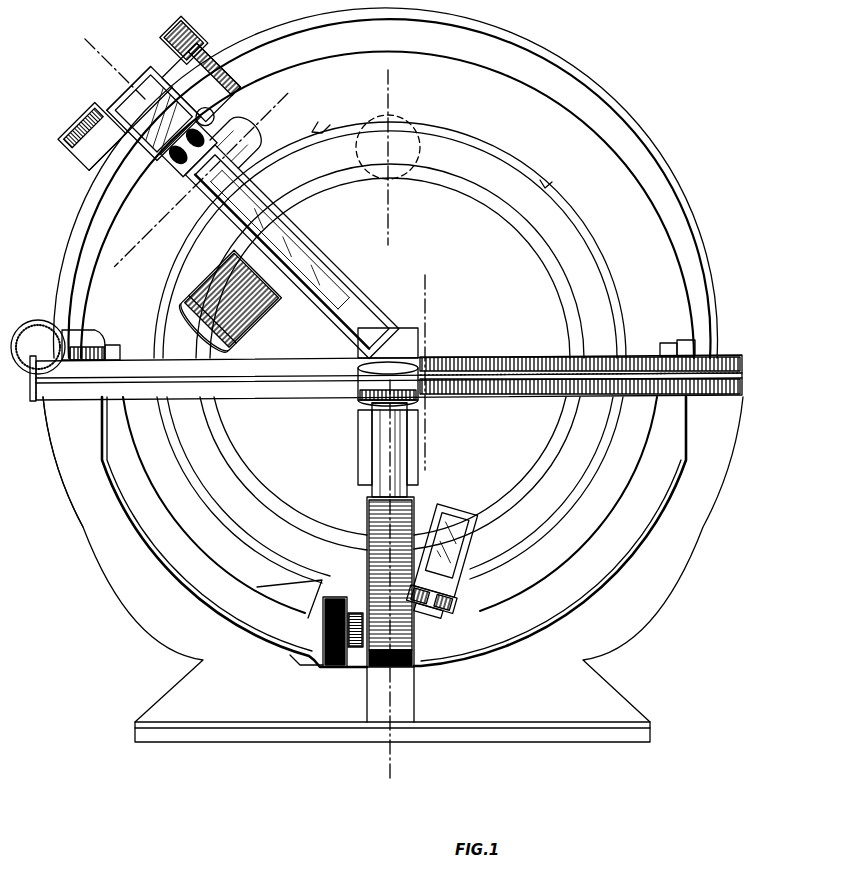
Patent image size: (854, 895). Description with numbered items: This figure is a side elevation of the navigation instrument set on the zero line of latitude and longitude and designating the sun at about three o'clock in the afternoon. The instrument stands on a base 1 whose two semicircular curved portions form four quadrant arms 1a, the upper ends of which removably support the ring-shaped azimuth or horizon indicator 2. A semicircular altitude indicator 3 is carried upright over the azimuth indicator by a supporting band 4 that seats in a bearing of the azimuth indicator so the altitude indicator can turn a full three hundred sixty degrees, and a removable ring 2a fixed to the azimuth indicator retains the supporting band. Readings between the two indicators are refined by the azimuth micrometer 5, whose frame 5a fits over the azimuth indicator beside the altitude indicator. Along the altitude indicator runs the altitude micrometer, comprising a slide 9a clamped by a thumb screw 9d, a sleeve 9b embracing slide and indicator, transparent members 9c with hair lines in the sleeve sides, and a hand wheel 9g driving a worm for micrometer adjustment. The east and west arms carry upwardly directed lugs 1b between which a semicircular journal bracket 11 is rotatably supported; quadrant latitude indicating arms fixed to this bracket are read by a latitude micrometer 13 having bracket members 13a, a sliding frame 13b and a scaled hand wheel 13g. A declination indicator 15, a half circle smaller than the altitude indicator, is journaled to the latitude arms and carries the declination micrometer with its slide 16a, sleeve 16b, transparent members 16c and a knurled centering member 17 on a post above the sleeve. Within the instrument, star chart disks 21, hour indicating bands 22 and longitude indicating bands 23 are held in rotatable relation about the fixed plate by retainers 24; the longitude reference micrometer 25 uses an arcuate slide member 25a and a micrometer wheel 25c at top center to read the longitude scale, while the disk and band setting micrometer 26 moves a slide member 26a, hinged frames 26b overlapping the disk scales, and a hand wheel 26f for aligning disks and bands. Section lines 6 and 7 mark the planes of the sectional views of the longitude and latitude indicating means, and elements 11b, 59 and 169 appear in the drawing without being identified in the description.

The base 1 is at (565, 735).
The quadrant arms 1a is at (58, 470).
The upwardly directed lugs 1b is at (686, 340).
The azimuth or horizon indicator 2 is at (62, 392).
The removable ring 2a is at (742, 362).
The altitude indicator 3 is at (92, 232).
The supporting band 4 is at (115, 62).
The azimuth micrometer 5 is at (268, 108).
The frame 5a is at (92, 338).
The section line 6- 6 is at (390, 88).
The section line 7- 7 is at (427, 298).
The slide 9a is at (205, 60).
The sleeve 9b is at (142, 80).
The transparent members 9c is at (108, 170).
The thumb screw 9d is at (200, 32).
The hand wheel 9g is at (82, 140).
The journal bracket 11 is at (160, 480).
The ring stop block 11b is at (300, 592).
The latitude micrometer 13 is at (372, 328).
The bracket members 13a is at (372, 440).
The frame 13b is at (372, 425).
The hand wheel 13g is at (360, 405).
The declination indicator 15 is at (355, 290).
The slide 16a is at (200, 222).
The sleeve 16b is at (185, 196).
The transparent members 16c is at (176, 178).
The centering member 17 is at (250, 116).
The star chart disk 21 is at (580, 262).
The hour indicating band 22 is at (572, 244).
The longitude indicating band 23 is at (566, 222).
The retainers 24 is at (560, 198).
The longitude reference micrometer 25 is at (470, 140).
The arcuate slide member 25a is at (452, 126).
The micrometer wheel 25c is at (405, 118).
The disk and band setting micrometer 26 is at (480, 590).
The slide member 26a is at (432, 612).
The frames 26b is at (466, 538).
The hand wheel 26f is at (300, 665).
The adjusting knob 59 is at (38, 347).
The eyepiece 169 is at (283, 126).